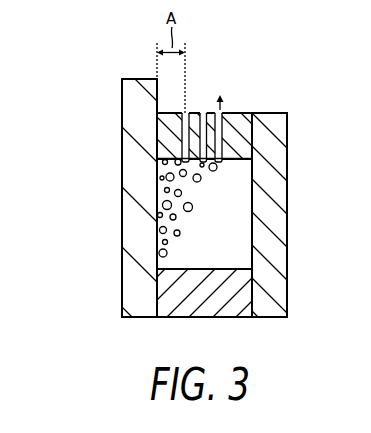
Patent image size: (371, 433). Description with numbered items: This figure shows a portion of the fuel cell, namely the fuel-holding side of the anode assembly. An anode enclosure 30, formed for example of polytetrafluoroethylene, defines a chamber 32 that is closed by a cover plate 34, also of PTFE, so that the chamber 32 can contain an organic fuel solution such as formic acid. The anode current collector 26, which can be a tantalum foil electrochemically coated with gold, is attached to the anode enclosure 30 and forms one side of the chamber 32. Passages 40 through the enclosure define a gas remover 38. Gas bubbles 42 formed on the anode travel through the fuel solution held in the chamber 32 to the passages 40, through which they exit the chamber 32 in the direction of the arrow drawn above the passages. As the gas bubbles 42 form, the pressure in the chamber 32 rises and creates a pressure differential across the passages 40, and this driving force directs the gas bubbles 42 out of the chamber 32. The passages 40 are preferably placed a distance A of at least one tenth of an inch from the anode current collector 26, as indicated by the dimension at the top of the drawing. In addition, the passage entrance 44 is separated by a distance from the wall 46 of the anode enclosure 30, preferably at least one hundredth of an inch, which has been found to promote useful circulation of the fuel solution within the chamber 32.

The anode current collector 26 is at (137, 283).
The anode enclosure 30 is at (188, 290).
The chamber 32 is at (235, 256).
The cover plate 34 is at (270, 242).
The gas remover 38 is at (239, 54).
The passages 40 is at (244, 136).
The gas bubbles 42 is at (162, 193).
The passage entrance 44 is at (222, 166).
The wall 46 is at (240, 153).